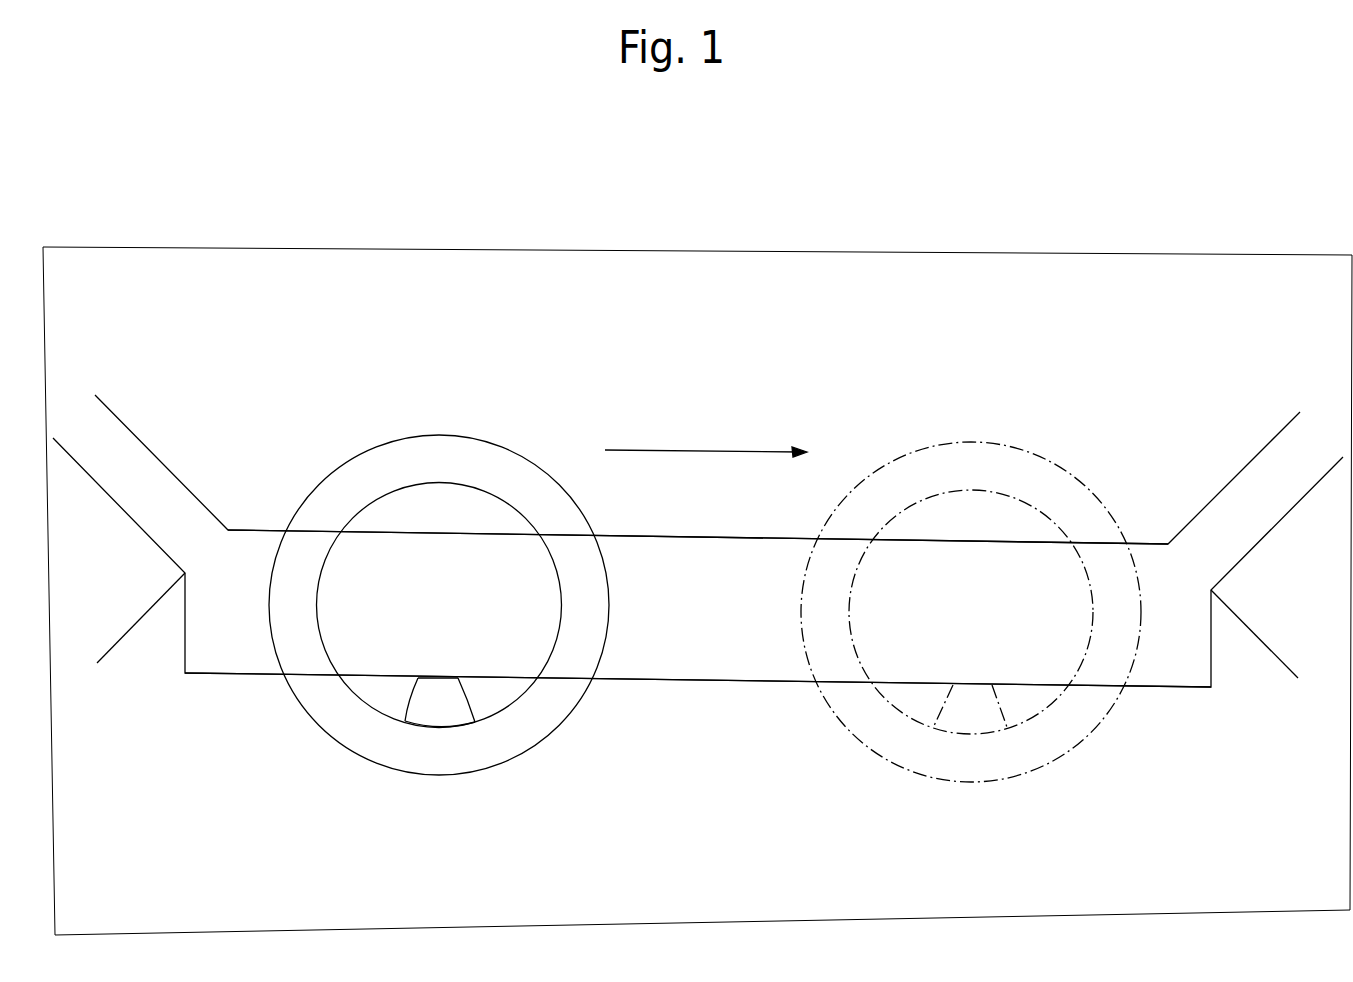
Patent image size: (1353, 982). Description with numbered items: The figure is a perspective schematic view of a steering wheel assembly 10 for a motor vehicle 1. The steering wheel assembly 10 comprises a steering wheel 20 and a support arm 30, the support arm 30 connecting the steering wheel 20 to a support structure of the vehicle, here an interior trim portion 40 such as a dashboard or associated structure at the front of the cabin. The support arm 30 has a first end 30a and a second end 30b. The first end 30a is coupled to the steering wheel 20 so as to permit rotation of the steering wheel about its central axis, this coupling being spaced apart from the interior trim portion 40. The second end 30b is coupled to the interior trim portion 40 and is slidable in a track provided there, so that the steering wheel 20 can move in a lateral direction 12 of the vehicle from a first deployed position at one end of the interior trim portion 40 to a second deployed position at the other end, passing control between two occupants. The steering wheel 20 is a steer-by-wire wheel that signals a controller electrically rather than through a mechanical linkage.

The motor vehicle 1 is at (1077, 240).
The steering wheel assembly 10 is at (502, 372).
The lateral direction 12 is at (738, 450).
The steering wheel 20 is at (552, 712).
The support arm 30 is at (433, 707).
The first end of the support arm 30a is at (458, 728).
The second end of the support arm 30b is at (437, 673).
The interior trim portion 40 is at (720, 657).